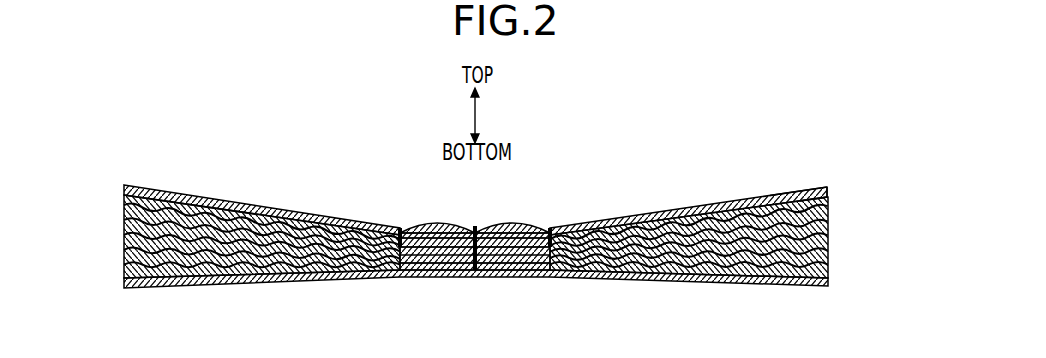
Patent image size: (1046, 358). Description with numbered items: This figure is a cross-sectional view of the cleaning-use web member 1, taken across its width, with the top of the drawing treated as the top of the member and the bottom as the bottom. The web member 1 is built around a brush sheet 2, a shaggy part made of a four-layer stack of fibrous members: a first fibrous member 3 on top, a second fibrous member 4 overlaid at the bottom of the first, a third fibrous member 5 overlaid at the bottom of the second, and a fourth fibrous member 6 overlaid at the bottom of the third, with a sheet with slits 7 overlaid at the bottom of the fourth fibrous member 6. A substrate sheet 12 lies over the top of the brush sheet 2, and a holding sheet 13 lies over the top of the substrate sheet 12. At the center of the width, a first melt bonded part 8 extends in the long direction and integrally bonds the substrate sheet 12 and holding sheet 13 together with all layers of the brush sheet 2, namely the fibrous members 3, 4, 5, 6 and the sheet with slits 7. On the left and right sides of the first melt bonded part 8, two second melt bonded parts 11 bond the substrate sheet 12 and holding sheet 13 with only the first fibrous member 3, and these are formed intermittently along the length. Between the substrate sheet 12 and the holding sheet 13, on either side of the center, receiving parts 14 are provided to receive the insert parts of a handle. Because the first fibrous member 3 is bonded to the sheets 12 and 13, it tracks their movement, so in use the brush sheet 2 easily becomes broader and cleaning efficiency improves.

The cleaning-use web member 1 is at (669, 162).
The brush sheet 2 is at (862, 193).
The first fibrous member 3 is at (829, 213).
The second fibrous member 4 is at (829, 236).
The third fibrous member 5 is at (829, 258).
The fourth fibrous member 6 is at (829, 275).
The sheet with slits 7 is at (829, 288).
The first melt bonded part 8 is at (477, 226).
The second melt bonded part 11 is at (400, 228).
The substrate sheet 12 is at (829, 193).
The holding sheet 13 is at (806, 193).
The receiving part 14 is at (431, 226).